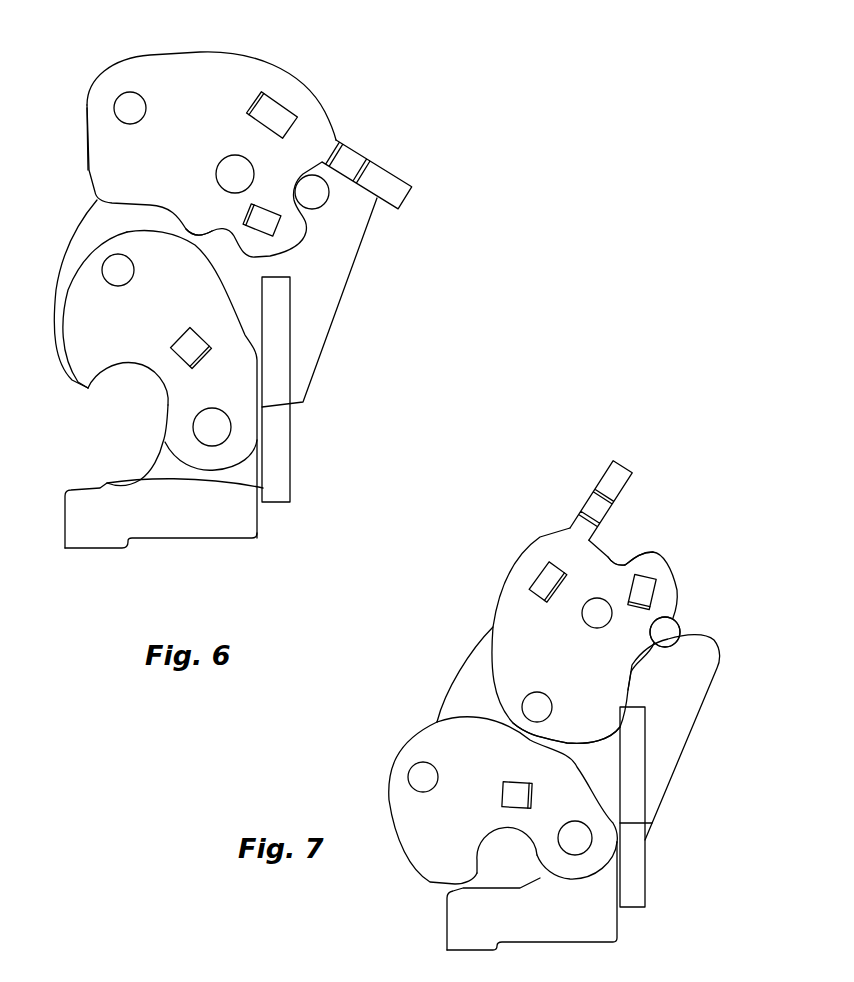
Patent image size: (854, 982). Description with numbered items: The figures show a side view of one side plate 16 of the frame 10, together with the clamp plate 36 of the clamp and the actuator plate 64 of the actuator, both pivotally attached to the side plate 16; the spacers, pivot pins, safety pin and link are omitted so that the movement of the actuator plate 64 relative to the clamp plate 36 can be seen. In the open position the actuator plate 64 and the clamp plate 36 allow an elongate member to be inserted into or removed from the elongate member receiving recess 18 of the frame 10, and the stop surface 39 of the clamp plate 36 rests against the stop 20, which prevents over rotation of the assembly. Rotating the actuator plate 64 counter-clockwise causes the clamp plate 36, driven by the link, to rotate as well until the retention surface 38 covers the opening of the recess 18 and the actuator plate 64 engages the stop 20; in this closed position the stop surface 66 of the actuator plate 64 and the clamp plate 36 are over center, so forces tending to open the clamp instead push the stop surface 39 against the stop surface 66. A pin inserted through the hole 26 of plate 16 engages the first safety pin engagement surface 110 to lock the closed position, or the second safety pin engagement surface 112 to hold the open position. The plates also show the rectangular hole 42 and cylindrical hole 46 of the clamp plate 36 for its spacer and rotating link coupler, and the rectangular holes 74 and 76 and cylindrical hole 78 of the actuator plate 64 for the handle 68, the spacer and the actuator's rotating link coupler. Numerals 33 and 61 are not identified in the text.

In FIG. 6, the frame 10 is at (282, 543).
In FIG. 7, the frame 10 is at (392, 906).
In FIG. 6, the second side plate 16 is at (140, 510).
In FIG. 7, the second side plate 16 is at (665, 745).
In FIG. 6, the elongate member receiving recess 18 is at (158, 458).
In FIG. 7, the elongate member receiving recess 18 is at (517, 883).
In FIG. 6, the stop 20 is at (277, 435).
In FIG. 7, the stop 20 is at (628, 792).
In FIG. 6, the hole 26 is at (318, 192).
In FIG. 7, the hole 26 is at (667, 637).
In FIG. 6, the pivot 33 is at (215, 422).
In FIG. 7, the pivot 33 is at (580, 838).
In FIG. 6, the clamp plate 36 is at (93, 347).
In FIG. 7, the clamp plate 36 is at (430, 813).
In FIG. 6, the retention surface 38 is at (143, 360).
In FIG. 7, the retention surface 38 is at (480, 840).
In FIG. 6, the stop surface 39 is at (120, 240).
In FIG. 7, the stop surface 39 is at (465, 674).
In FIG. 6, the rectangularly-shaped hole 42 is at (195, 340).
In FIG. 7, the rectangularly-shaped hole 42 is at (518, 790).
In FIG. 6, the cylindrically-shaped hole 46 is at (122, 268).
In FIG. 7, the cylindrically-shaped hole 46 is at (420, 776).
In FIG. 6, the pivot hole 61 is at (233, 165).
In FIG. 7, the pivot hole 61 is at (593, 612).
In FIG. 6, the actuator plate 64 is at (212, 92).
In FIG. 7, the actuator plate 64 is at (512, 610).
In FIG. 6, the stop surface 66 is at (87, 120).
In FIG. 7, the stop surface 66 is at (547, 742).
In FIG. 6, the handle 68 is at (393, 182).
In FIG. 7, the handle 68 is at (612, 478).
In FIG. 6, the rectangularly-shaped hole 74 is at (272, 117).
In FIG. 7, the rectangularly-shaped hole 74 is at (550, 583).
In FIG. 6, the rectangularly-shaped hole 76 is at (262, 227).
In FIG. 7, the rectangularly-shaped hole 76 is at (643, 587).
In FIG. 6, the cylindrically-shaped hole 78 is at (124, 103).
In FIG. 7, the cylindrically-shaped hole 78 is at (535, 707).
In FIG. 6, the first safety pin engagement surface 110 is at (220, 228).
In FIG. 7, the first safety pin engagement surface 110 is at (668, 610).
In FIG. 6, the second safety pin engagement surface 112 is at (300, 210).
In FIG. 7, the second safety pin engagement surface 112 is at (610, 560).